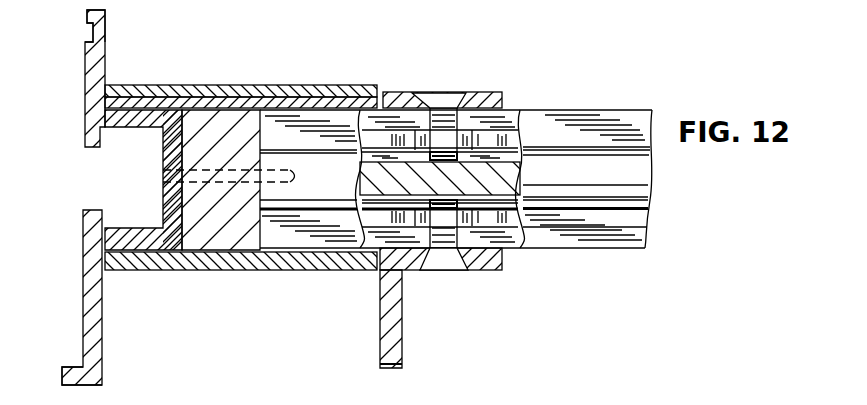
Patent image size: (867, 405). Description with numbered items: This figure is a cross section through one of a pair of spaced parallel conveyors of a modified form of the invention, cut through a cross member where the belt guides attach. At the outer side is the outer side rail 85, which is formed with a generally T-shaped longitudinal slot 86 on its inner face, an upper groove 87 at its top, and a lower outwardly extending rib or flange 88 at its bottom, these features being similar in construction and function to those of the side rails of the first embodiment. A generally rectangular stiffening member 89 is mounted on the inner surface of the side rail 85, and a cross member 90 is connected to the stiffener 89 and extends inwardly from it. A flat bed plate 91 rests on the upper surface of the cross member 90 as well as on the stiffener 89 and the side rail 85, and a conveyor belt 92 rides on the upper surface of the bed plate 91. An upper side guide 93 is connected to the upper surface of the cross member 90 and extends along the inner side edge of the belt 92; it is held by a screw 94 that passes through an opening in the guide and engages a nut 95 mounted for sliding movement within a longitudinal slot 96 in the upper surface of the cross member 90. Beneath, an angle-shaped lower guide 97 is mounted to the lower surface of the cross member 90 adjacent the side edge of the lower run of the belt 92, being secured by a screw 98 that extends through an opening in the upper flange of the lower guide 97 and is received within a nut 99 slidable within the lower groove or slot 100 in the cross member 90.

The outer side rail 85 is at (84, 128).
The T-shaped longitudinal slot 86 is at (105, 218).
The upper groove 87 is at (90, 33).
The lower outwardly extending rib or flange 88 is at (62, 378).
The stiffening member 89 is at (232, 123).
The cross member 90 is at (592, 110).
The bed plate 91 is at (305, 100).
The conveyor belt 92 is at (283, 85).
The upper side guide 93 is at (490, 95).
The screw 94 is at (450, 97).
The nut 95 is at (422, 145).
The longitudinal slot 96 is at (515, 112).
The lower guide 97 is at (402, 337).
The screw 98 is at (435, 262).
The nut 99 is at (470, 249).
The lower groove or slot 100 is at (508, 224).